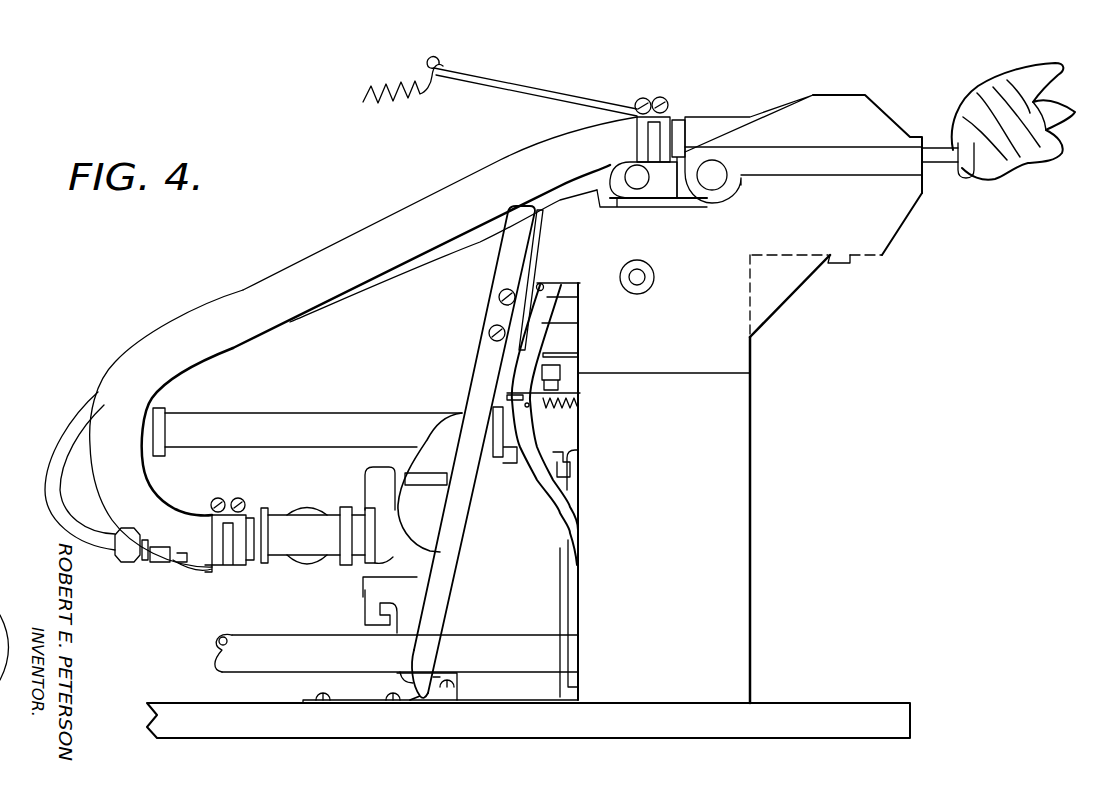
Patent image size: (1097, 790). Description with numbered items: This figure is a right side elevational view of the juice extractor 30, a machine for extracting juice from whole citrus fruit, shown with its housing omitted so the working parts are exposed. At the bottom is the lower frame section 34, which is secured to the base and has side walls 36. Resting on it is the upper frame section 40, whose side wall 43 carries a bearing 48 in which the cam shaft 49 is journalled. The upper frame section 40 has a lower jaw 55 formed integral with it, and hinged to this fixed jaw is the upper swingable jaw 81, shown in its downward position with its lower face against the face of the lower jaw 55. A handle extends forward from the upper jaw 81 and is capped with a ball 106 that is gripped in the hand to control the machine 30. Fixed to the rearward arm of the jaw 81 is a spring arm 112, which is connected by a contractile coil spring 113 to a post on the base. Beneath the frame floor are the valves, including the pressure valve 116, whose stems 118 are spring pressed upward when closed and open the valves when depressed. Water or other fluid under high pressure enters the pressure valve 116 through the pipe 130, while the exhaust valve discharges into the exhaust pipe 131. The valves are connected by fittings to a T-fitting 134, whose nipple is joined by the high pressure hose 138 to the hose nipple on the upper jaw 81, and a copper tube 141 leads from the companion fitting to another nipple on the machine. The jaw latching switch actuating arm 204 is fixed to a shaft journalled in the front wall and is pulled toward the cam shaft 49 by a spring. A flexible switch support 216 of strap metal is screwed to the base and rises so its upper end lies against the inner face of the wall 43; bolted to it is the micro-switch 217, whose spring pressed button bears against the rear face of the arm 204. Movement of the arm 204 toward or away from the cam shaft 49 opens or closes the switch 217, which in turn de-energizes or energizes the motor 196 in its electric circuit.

The juice extractor 30 is at (958, 373).
The lower frame section 34 is at (738, 511).
The side walls 36 is at (590, 597).
The upper frame section 40 is at (738, 350).
The side wall 43 is at (577, 214).
The bearing 48 is at (645, 262).
The cam shaft 49 is at (640, 277).
The lower jaw 55 is at (878, 227).
The upper swingable jaw 81 is at (843, 108).
The ball 106 is at (977, 165).
The spring arm 112 is at (472, 87).
The contractile coil spring 113 is at (410, 102).
The pressure valve 116 is at (515, 443).
The valve stems 118 is at (578, 356).
The pipe 130 is at (270, 647).
The exhaust pipe 131 is at (292, 440).
The T-fitting 134 is at (312, 547).
The high pressure hose 138 is at (200, 352).
The copper tube 141 is at (428, 258).
The motor 196 is at (510, 689).
The jaw latching switch actuating arm 204 is at (561, 515).
The flexible switch support 216 is at (485, 371).
The micro-switch 217 is at (518, 313).